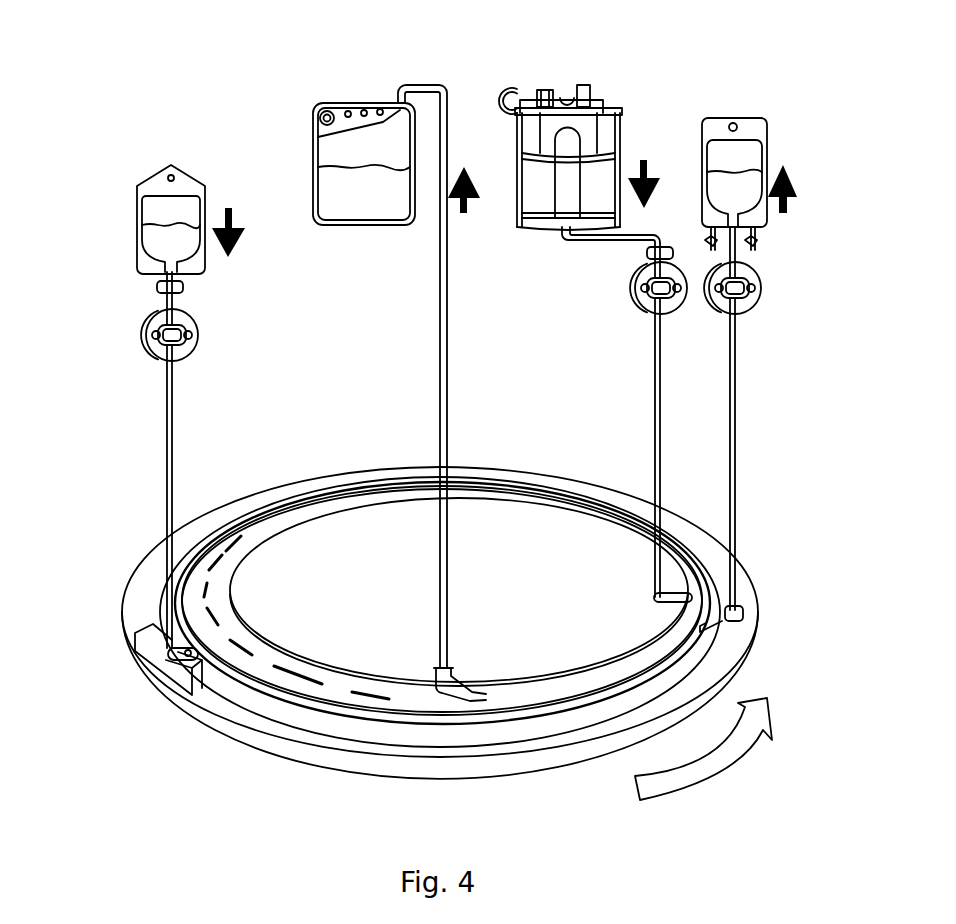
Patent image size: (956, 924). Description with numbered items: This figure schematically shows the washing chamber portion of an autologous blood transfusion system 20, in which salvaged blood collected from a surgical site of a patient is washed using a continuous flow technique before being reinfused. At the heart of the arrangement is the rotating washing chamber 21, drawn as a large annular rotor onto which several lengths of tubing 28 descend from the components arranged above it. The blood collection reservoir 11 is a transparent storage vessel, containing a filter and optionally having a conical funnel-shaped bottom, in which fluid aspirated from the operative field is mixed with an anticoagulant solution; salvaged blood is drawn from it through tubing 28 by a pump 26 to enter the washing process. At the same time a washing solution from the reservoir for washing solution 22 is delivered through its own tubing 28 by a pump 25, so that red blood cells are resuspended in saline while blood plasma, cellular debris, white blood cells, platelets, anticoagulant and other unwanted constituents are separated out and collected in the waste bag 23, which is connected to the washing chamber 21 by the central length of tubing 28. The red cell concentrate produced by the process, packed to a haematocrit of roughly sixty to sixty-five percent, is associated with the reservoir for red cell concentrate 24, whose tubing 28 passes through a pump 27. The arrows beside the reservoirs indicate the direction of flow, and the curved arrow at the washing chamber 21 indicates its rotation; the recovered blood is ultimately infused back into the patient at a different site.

The autologous blood transfusion system 20 is at (93, 80).
The blood collection reservoir 11 is at (622, 130).
The rotating washing chamber 21 is at (748, 603).
The reservoir for washing solution 22 is at (138, 214).
The waste bag 23 is at (313, 158).
The reservoir for red cell concentrate 24 is at (760, 118).
The pump 25 is at (187, 346).
The pump 26 is at (656, 312).
The pump 27 is at (744, 302).
The tubing 28 is at (176, 421).